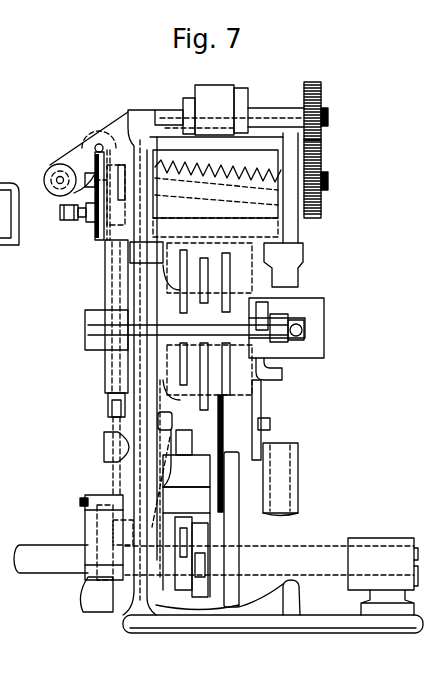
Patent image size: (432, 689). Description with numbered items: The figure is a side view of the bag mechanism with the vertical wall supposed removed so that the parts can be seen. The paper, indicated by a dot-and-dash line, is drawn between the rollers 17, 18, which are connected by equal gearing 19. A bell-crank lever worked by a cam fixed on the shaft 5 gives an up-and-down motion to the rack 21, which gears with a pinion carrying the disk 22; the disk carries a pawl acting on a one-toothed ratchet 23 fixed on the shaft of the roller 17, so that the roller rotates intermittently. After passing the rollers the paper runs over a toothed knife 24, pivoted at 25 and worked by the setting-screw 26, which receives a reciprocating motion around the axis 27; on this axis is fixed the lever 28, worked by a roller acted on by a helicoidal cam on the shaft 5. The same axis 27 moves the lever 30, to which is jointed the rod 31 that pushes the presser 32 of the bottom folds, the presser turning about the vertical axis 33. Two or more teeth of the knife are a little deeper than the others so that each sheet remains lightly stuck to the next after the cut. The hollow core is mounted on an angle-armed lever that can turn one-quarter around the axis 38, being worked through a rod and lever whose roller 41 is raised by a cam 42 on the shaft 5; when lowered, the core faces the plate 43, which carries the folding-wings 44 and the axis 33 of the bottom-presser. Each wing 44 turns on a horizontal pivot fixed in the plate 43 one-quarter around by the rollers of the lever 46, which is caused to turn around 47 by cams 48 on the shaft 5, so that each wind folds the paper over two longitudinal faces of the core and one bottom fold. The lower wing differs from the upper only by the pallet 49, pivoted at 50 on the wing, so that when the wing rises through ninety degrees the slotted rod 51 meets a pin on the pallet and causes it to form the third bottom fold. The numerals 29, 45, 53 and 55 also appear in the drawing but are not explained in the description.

The shaft 5 is at (51, 559).
The roller 17 is at (215, 193).
The roller 18 is at (229, 110).
The gearing 19 is at (340, 160).
The rack 21 is at (125, 380).
The disk 22 is at (98, 157).
The one-toothed ratchet 23 is at (92, 188).
The toothed knife 24 is at (218, 167).
The pivot 25 is at (99, 144).
The setting-screw 26 is at (80, 218).
The axis 27 is at (104, 378).
The lever 28 is at (84, 502).
The bracket 29 is at (95, 598).
The lever 30 is at (86, 332).
The rod 31 is at (304, 330).
The presser 32 is at (302, 308).
The vertical axis 33 is at (296, 372).
The axis 38 is at (7, 378).
The roller 41 is at (203, 453).
The cam 42 is at (233, 505).
The plate 43 is at (237, 337).
The folding-wings 44 is at (209, 322).
The bar 45 is at (206, 323).
The lever 46 is at (189, 471).
The pivot 47 is at (186, 500).
The cams 48 is at (177, 585).
The pallet 49 is at (272, 452).
The pivot 50 is at (270, 424).
The slotted rod 51 is at (262, 403).
The part 53 is at (5, 257).
The clamp 55 is at (158, 418).